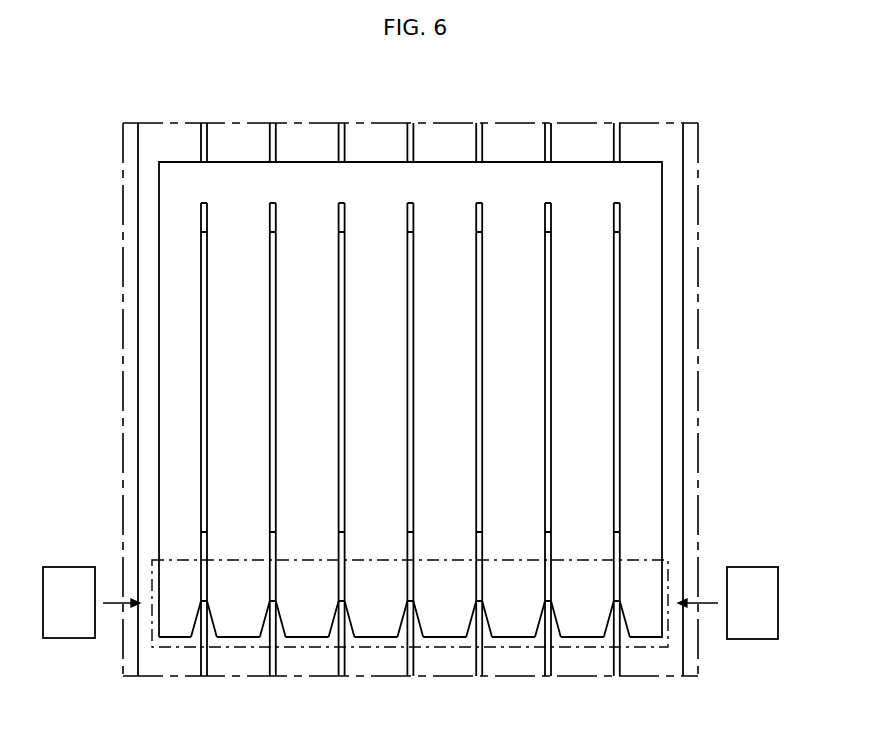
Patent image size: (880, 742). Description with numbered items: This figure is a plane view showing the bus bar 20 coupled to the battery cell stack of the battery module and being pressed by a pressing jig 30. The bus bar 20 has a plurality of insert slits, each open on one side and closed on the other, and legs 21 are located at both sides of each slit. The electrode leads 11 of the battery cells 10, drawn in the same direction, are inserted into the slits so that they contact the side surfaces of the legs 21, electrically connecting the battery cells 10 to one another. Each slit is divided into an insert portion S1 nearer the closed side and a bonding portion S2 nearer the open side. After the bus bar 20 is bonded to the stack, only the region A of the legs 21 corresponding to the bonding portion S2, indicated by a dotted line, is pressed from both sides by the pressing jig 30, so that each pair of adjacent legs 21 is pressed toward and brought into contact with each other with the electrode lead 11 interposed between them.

The battery cell 10 is at (668, 145).
The electrode lead 11 is at (618, 260).
The bus bar 20 is at (307, 160).
The leg 21 is at (177, 408).
The pressing jig 30 is at (64, 567).
The insert portion S1 is at (618, 330).
The bonding portion S2 is at (617, 582).
The region A is at (650, 648).